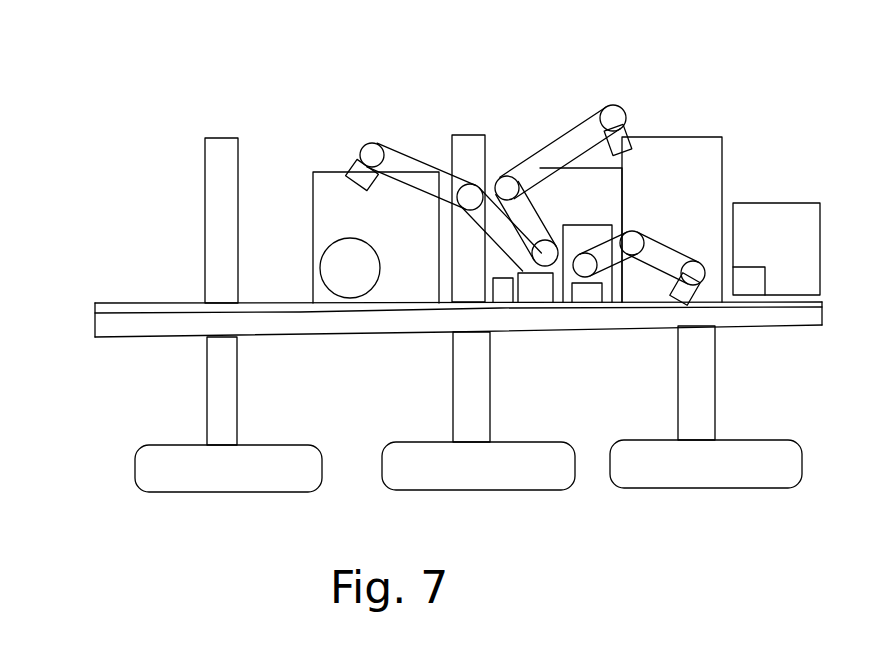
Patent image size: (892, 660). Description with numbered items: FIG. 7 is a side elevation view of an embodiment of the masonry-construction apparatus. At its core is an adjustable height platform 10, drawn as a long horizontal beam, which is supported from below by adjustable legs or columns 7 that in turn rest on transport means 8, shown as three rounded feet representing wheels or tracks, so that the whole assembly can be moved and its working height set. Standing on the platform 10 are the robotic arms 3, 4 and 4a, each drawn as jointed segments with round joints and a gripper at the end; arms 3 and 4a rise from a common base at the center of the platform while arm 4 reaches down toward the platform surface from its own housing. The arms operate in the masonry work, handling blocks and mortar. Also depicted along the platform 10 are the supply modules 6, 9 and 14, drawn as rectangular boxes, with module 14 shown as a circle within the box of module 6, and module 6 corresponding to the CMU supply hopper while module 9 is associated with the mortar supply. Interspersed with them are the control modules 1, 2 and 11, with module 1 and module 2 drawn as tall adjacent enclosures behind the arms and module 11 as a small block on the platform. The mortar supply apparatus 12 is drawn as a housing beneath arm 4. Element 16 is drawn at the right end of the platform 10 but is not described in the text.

The control module 1 is at (673, 196).
The control module 2 is at (587, 208).
The robotic arm 3 is at (563, 147).
The robotic arm 4 is at (657, 258).
The robotic arm 4a is at (405, 168).
The supply module 6 is at (411, 247).
The adjustable legs or columns 7 is at (231, 400).
The transport means 8 is at (228, 478).
The supply module 9 is at (792, 244).
The adjustable height platform 10 is at (110, 328).
The control module 11 is at (503, 290).
The mortar supply apparatus 12 is at (582, 238).
The supply module 14 is at (364, 280).
The output block 16 is at (755, 283).